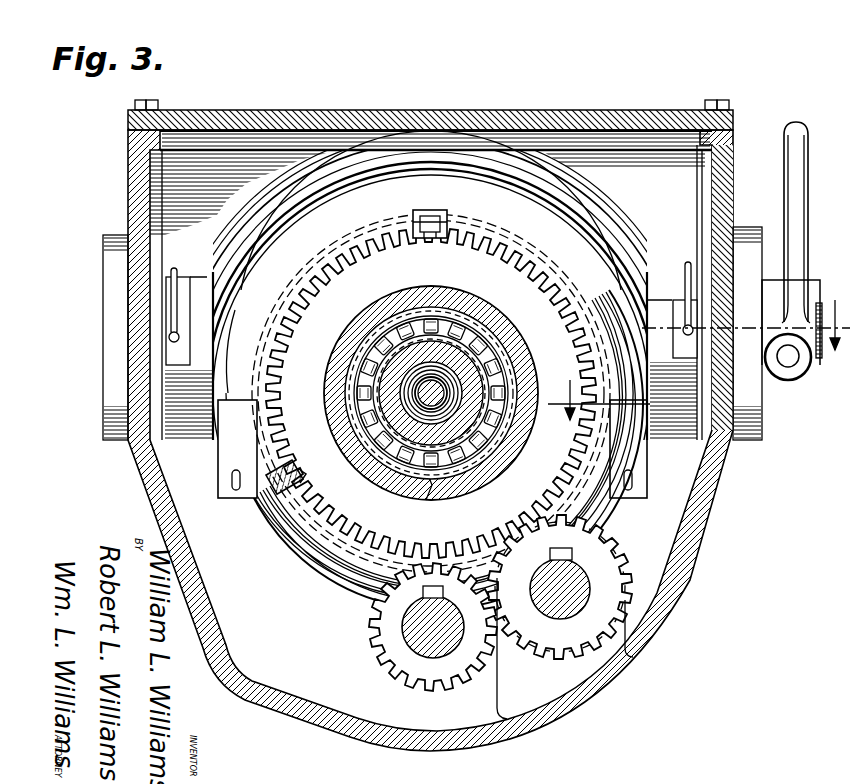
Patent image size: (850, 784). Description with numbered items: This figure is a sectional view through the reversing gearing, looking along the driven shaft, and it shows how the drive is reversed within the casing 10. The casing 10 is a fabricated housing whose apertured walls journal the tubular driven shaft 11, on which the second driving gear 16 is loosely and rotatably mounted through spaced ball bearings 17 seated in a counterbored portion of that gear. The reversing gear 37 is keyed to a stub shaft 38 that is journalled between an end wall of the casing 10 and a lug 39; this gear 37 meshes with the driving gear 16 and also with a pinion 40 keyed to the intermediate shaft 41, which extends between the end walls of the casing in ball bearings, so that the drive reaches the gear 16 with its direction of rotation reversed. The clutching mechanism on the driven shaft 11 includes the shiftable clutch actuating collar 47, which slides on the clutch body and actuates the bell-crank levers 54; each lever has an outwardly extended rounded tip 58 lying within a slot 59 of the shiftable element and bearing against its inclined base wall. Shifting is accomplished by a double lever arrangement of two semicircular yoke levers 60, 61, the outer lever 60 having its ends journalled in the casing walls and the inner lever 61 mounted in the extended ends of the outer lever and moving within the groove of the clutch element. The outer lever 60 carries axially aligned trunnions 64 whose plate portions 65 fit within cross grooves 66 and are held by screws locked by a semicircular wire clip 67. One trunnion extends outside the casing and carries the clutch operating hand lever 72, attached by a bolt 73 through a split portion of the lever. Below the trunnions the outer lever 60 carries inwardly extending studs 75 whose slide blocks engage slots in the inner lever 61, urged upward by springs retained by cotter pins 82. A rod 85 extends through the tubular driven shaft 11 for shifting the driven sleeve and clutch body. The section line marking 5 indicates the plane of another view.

The section line arrow 5 is at (599, 400).
The casing 10 is at (705, 522).
The driven shaft 11 is at (432, 492).
The second driving gear 16 is at (320, 540).
The ball bearings 17 is at (400, 478).
The reversing gear 37 is at (618, 548).
The stub shaft 38 is at (560, 612).
The lug 39 is at (500, 688).
The pinion 40 is at (410, 678).
The intermediate shaft 41 is at (405, 630).
The shiftable clutch actuating collar 47 is at (286, 500).
The levers 54 is at (300, 470).
The rounded tip 58 is at (304, 483).
The slots 59 is at (265, 498).
The outer yoke lever 60 is at (275, 196).
The inner yoke lever 61 is at (308, 238).
The trunnions 64 is at (826, 310).
The plate portions 65 is at (176, 358).
The cross grooves 66 is at (222, 300).
The wire clip 67 is at (178, 272).
The hand lever 72 is at (800, 246).
The bolt 73 is at (793, 372).
The studs 75 is at (206, 442).
The cotter pins 82 is at (228, 482).
The rod 85 is at (492, 356).